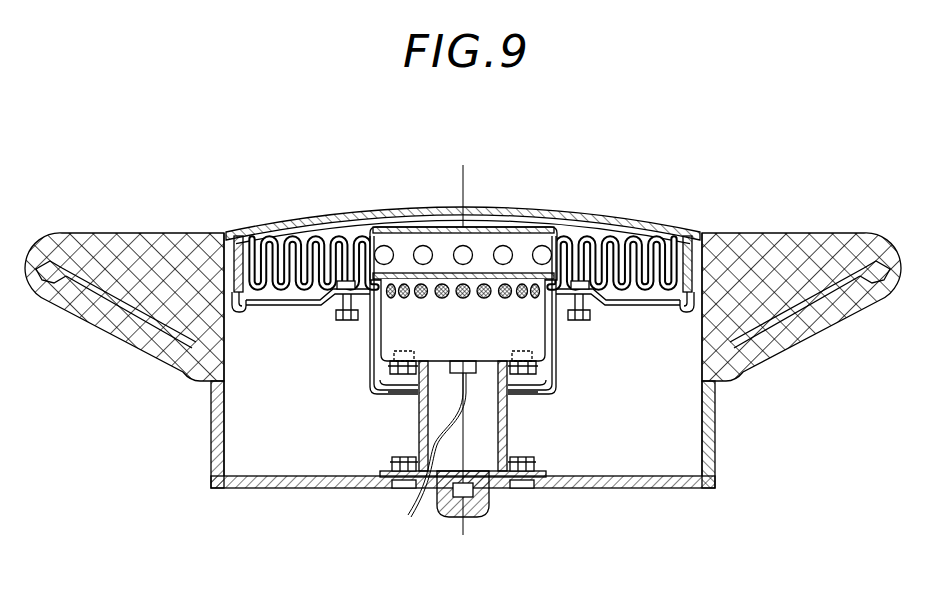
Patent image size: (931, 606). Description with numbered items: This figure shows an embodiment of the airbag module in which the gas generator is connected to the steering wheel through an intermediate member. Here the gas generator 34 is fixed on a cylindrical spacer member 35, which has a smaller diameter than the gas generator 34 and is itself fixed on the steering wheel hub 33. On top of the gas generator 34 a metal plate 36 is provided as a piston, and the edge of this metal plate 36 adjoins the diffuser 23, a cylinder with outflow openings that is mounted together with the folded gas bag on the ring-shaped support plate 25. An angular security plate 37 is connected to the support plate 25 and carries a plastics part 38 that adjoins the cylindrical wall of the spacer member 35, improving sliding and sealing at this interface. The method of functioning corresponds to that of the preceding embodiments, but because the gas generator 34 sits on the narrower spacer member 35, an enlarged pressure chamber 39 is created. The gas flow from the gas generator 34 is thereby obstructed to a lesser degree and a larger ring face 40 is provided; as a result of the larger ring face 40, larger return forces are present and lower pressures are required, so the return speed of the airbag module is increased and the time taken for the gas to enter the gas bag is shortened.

The diffuser 23 is at (507, 229).
The support plate 25 is at (633, 297).
The steering wheel hub 33 is at (283, 483).
The gas generator 34 is at (398, 338).
The cylindrical spacer member 35 is at (415, 459).
The metal plate 36 is at (397, 243).
The angular security plate 37 is at (560, 357).
The plastics part 38 is at (520, 404).
The pressure chamber 39 is at (538, 380).
The ring face 40 is at (392, 393).